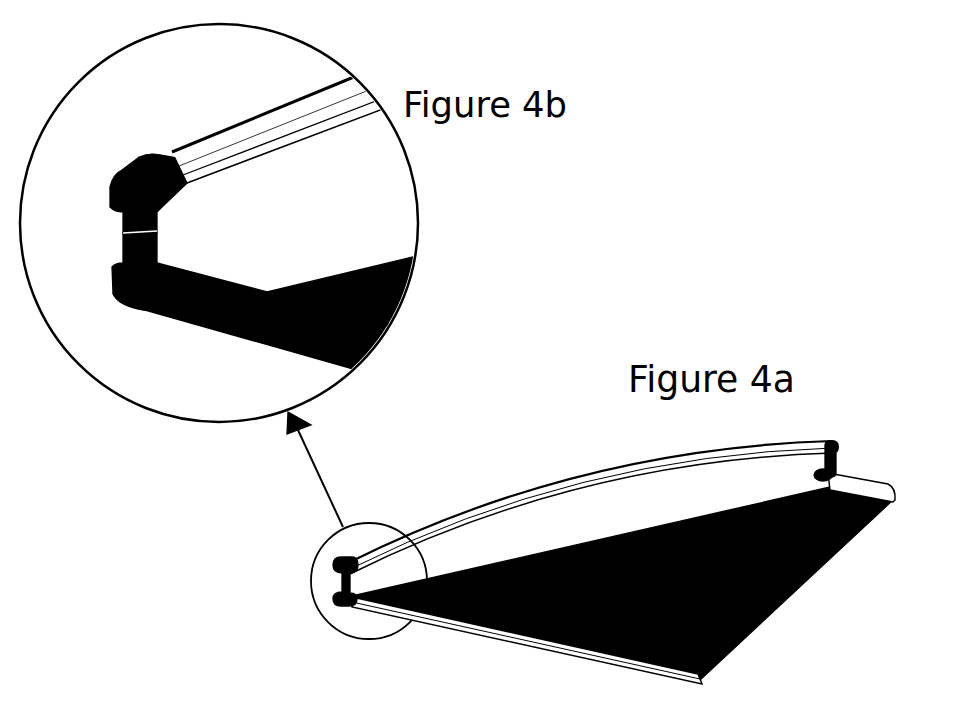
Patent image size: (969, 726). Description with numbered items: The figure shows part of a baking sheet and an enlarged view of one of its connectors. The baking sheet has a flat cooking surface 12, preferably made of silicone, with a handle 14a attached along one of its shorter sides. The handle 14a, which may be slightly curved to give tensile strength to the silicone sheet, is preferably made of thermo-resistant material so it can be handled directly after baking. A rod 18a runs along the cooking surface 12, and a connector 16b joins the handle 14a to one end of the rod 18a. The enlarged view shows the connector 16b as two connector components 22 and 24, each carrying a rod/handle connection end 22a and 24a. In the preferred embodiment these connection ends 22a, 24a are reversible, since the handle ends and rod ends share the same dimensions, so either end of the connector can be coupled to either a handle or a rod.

In FIG. 4b, the cooking surface 12 is at (388, 283).
In FIG. 4a, the cooking surface 12 is at (727, 607).
In FIG. 4b, the handle 14a is at (242, 132).
In FIG. 4a, the handle 14a is at (517, 498).
In FIG. 4a, the connector 16b is at (338, 580).
In FIG. 4b, the rod 18a is at (173, 312).
In FIG. 4a, the rod 18a is at (443, 628).
In FIG. 4b, the connector component 22 is at (100, 207).
In FIG. 4b, the rod/handle connection end 22a is at (158, 155).
In FIG. 4b, the connector component 24 is at (98, 275).
In FIG. 4b, the rod/handle connection end 24a is at (142, 312).